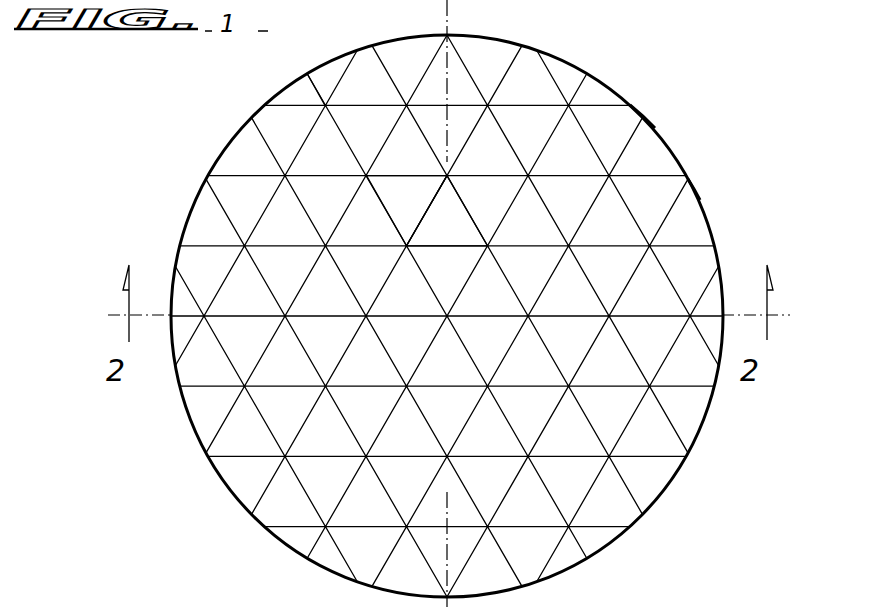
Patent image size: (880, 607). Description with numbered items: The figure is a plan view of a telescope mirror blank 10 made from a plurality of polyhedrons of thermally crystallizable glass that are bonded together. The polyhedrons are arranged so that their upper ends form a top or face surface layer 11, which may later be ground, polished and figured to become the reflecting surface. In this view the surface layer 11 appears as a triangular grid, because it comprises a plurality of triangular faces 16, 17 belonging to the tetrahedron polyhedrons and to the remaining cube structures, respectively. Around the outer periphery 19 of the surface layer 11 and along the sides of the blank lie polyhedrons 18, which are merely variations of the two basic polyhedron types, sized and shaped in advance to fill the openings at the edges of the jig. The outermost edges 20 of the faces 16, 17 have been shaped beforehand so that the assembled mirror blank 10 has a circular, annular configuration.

The telescope mirror blank 10 is at (725, 205).
The face surface layer 11 is at (658, 198).
The triangular faces 16 is at (524, 378).
The triangular faces 17 is at (493, 344).
The polyhedrons 18 is at (357, 72).
The outer periphery 19 is at (645, 117).
The outermost edges 20 is at (290, 84).